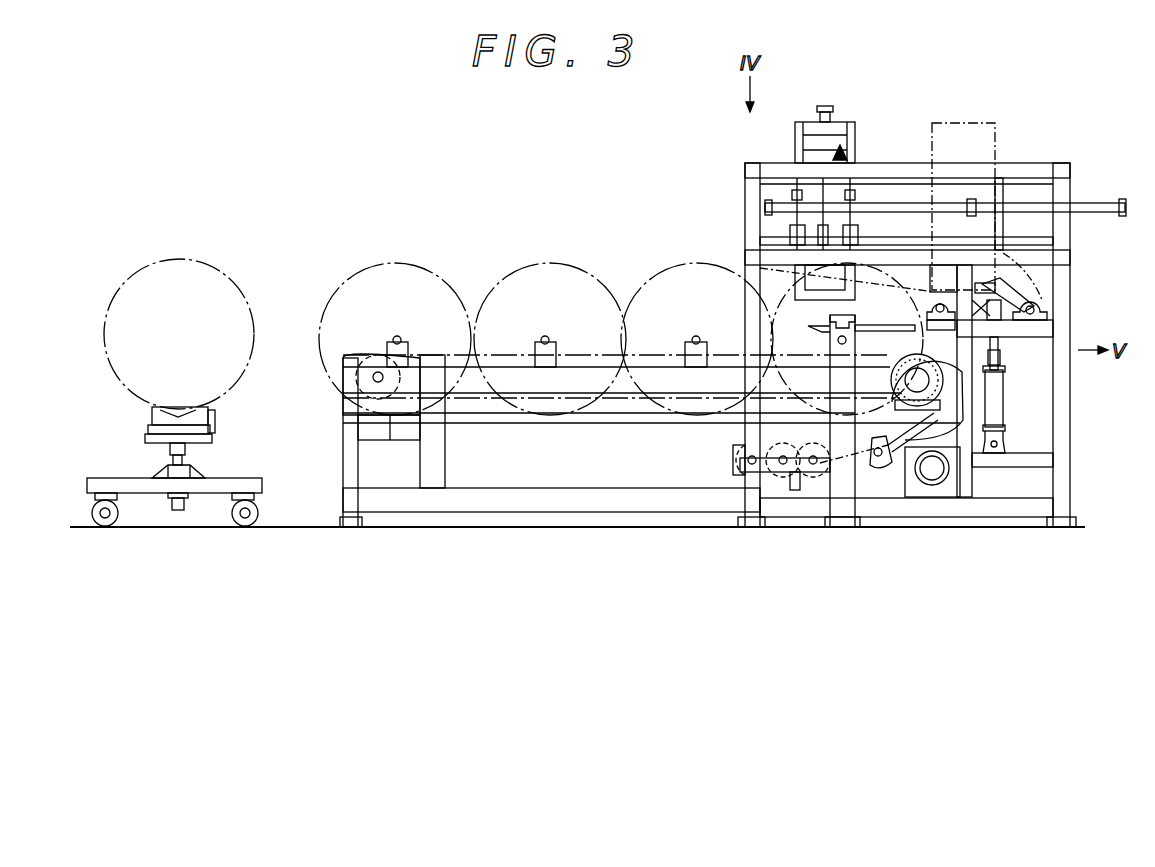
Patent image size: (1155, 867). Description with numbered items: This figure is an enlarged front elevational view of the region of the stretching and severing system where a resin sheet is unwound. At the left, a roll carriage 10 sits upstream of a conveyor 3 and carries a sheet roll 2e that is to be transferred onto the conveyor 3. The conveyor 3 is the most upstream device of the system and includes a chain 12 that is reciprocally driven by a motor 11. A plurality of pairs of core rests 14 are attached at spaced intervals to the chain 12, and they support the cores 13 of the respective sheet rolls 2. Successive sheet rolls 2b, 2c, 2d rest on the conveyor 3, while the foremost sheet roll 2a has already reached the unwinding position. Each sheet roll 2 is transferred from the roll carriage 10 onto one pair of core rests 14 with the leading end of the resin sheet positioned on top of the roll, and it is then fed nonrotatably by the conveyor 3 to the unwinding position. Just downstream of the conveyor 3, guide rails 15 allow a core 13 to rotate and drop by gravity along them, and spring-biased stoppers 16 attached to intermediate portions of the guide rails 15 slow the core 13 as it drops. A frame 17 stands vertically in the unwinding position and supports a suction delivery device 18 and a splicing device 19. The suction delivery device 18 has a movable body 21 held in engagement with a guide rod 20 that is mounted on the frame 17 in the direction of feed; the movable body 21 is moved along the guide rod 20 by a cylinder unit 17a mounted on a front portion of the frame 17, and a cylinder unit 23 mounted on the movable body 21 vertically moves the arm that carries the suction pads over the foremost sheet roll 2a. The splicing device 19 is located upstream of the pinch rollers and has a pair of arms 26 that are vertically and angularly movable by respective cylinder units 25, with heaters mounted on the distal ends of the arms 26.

The sheet roll 2 is at (190, 307).
The foremost sheet roll 2a is at (792, 318).
The successive sheet roll 2b is at (657, 270).
The successive sheet roll 2c is at (550, 270).
The successive sheet roll 2d is at (393, 268).
The sheet roll 2e is at (176, 262).
The conveyor 3 is at (540, 432).
The roll carriage 10 is at (112, 482).
The motor 11 is at (933, 472).
The chain 12 is at (448, 350).
The core 13 is at (395, 338).
The core rests 14 is at (387, 357).
The guide rails 15 is at (903, 395).
The spring-biased stoppers 16 is at (878, 462).
The frame 17 is at (752, 178).
The cylinder unit 17a is at (1091, 203).
The suction delivery device 18 is at (845, 152).
The splicing device 19 is at (998, 280).
The guide rod 20 is at (1001, 165).
The movable body 21 is at (836, 128).
The cylinder unit 23 is at (825, 106).
The cylinder units 25 is at (1003, 405).
The arms 26 is at (1015, 292).